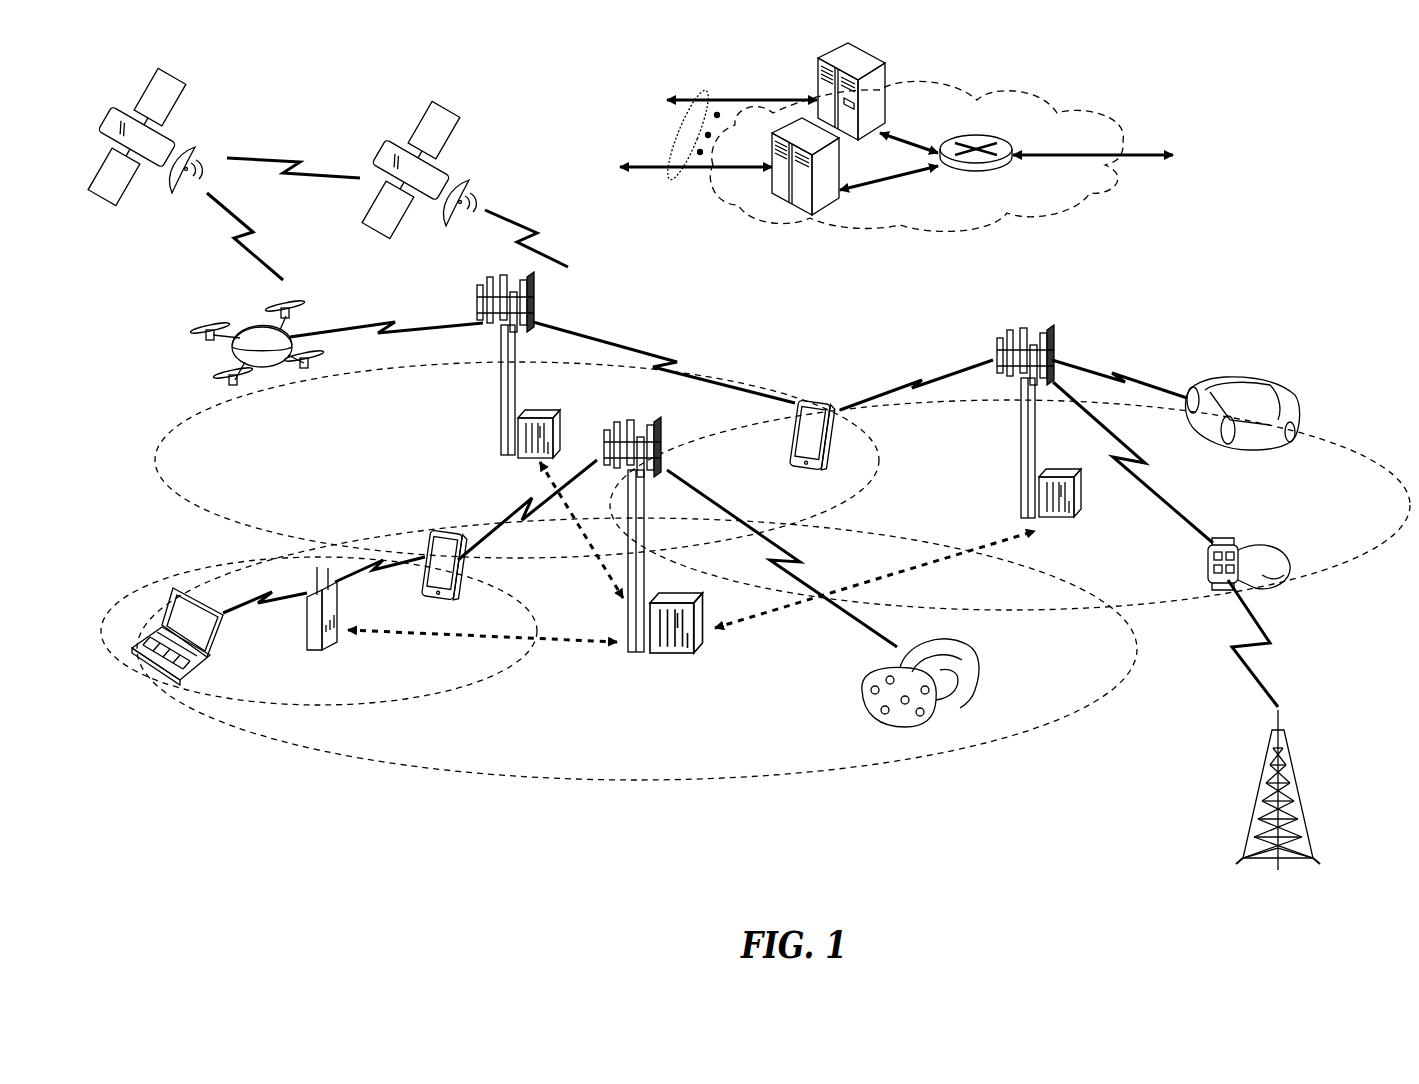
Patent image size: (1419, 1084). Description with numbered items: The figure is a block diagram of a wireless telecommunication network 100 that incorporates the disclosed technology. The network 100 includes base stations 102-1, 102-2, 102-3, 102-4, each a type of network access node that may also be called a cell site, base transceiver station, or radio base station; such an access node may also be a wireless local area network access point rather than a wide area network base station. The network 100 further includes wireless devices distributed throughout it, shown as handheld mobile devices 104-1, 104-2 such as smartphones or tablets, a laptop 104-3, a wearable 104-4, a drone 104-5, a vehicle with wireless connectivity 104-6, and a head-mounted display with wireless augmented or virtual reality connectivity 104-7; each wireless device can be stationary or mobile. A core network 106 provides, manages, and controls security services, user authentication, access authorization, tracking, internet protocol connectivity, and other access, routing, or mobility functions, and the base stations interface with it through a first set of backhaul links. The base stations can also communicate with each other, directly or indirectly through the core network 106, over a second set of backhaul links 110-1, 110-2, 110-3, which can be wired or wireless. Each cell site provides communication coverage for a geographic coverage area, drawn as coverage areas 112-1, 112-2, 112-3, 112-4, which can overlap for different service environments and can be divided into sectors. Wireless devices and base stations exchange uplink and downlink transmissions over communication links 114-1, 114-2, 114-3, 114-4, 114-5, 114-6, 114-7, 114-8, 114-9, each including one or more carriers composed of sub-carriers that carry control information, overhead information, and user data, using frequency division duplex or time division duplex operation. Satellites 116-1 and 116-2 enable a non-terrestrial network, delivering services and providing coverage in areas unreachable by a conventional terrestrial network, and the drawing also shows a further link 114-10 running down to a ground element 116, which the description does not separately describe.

The wireless telecommunication network 100 is at (1312, 140).
The base station 102-1 is at (633, 653).
The base station 102-2 is at (500, 403).
The base station 102-3 is at (1018, 437).
The base station 102-4 is at (307, 637).
The handheld mobile device 104-1 is at (460, 577).
The handheld mobile device 104-2 is at (793, 437).
The laptop 104-3 is at (157, 667).
The wearable 104-4 is at (1223, 540).
The drone 104-5 is at (268, 370).
The vehicle with wireless connectivity 104-6 is at (1260, 390).
The head-mounted display with wireless AR/VR connectivity 104-7 is at (973, 667).
The core network 106 is at (1005, 218).
The backhaul link 110-1 is at (377, 637).
The backhaul link 110-2 is at (943, 563).
The backhaul link 110-3 is at (597, 557).
The coverage area 112-1 is at (565, 781).
The coverage area 112-2 is at (443, 692).
The coverage area 112-3 is at (218, 510).
The coverage area 112-4 is at (1300, 437).
The communication link 114-1 is at (797, 560).
The communication link 114-2 is at (520, 500).
The communication link 114-3 is at (233, 612).
The communication link 114-4 is at (380, 583).
The communication link 114-5 is at (383, 322).
The communication link 114-6 is at (913, 380).
The communication link 114-7 is at (668, 348).
The communication link 114-8 is at (1145, 465).
The communication link 114-9 is at (1113, 372).
The communication link 114-10 is at (1300, 650).
The broadcast tower / satellite ground station 116 is at (1292, 777).
The satellite 116-1 is at (195, 148).
The satellite 116-2 is at (472, 185).